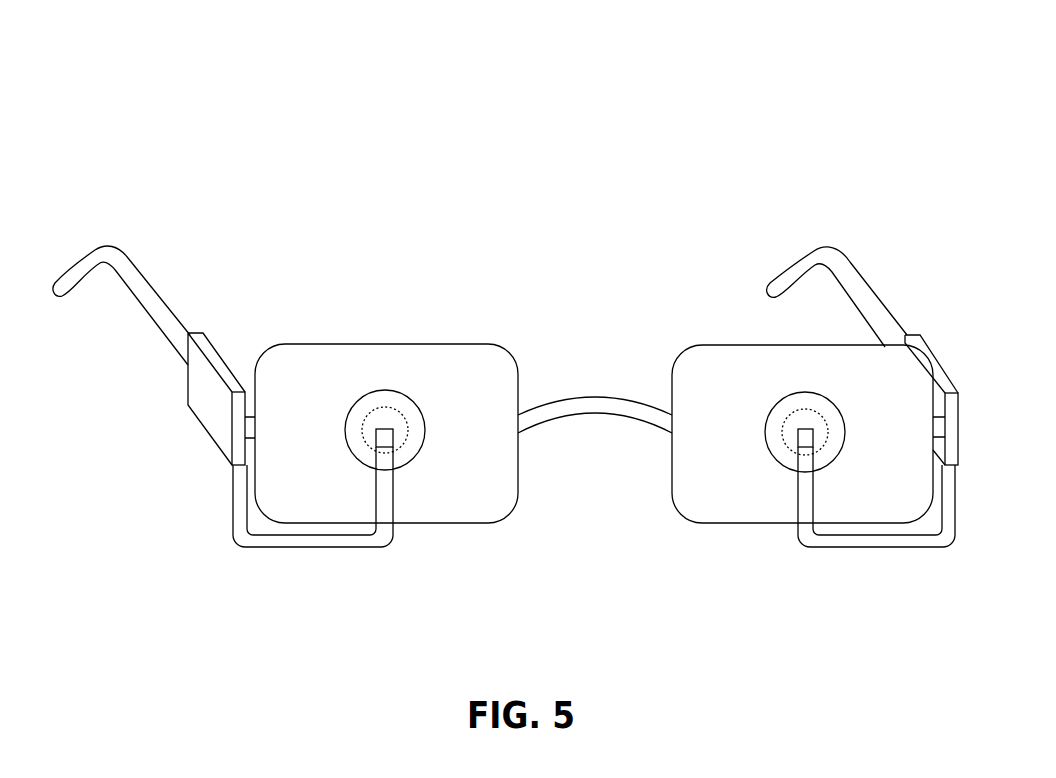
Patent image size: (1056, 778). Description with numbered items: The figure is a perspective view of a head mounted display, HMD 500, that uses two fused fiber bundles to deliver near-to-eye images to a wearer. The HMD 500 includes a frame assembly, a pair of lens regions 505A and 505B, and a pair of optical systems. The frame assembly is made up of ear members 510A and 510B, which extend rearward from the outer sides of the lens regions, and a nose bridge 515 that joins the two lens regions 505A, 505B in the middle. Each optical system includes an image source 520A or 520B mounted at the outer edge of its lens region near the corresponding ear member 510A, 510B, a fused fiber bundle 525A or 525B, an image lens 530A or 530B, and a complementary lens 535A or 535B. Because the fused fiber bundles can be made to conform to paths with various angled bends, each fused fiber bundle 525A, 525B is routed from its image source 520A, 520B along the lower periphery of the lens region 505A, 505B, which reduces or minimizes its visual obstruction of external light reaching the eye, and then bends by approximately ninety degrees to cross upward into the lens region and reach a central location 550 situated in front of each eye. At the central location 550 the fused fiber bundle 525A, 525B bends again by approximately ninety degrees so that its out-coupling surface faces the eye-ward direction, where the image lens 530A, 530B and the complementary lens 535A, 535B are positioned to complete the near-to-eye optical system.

The head mounted display (HMD) 500 is at (898, 80).
The lens region 505A is at (460, 523).
The lens region 505B is at (713, 523).
The ear member 510A is at (137, 278).
The ear member 510B is at (793, 261).
The nose bridge 515 is at (603, 397).
The image source 520A is at (210, 408).
The image source 520B is at (958, 420).
The fused fiber bundle 525A is at (240, 542).
The fused fiber bundle 525B is at (860, 548).
The image lens 530A is at (405, 430).
The image lens 530B is at (780, 430).
The complementary lens 535A is at (357, 400).
The complementary lens 535B is at (840, 457).
The central location 550 is at (388, 377).